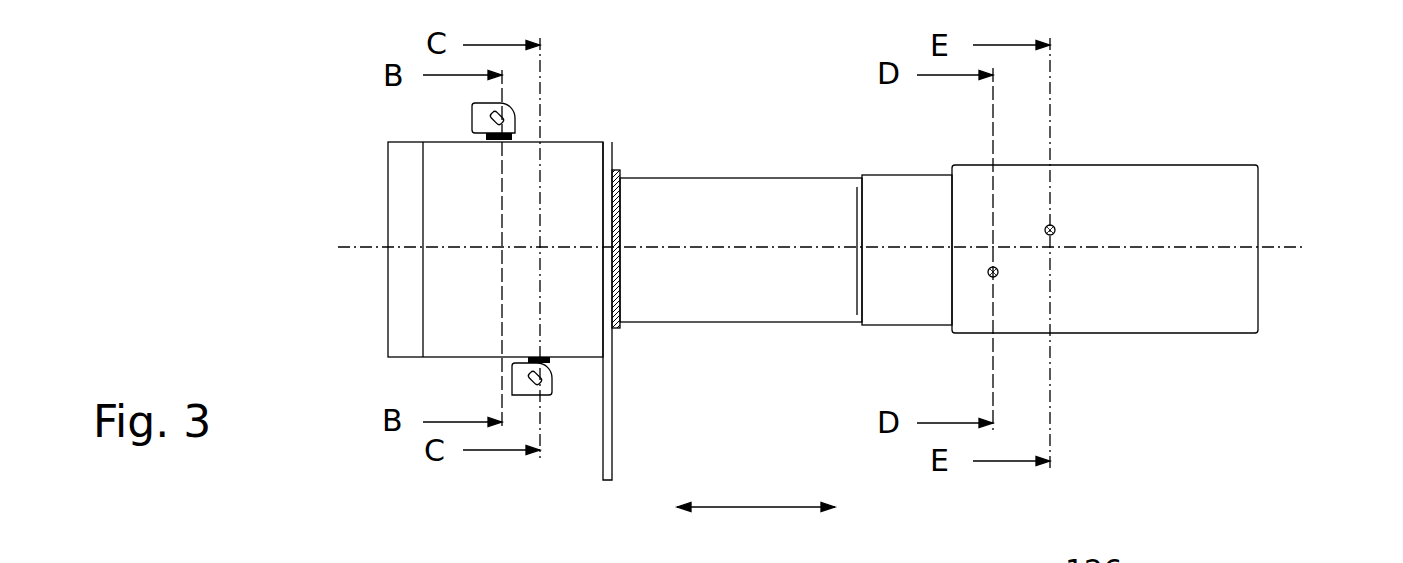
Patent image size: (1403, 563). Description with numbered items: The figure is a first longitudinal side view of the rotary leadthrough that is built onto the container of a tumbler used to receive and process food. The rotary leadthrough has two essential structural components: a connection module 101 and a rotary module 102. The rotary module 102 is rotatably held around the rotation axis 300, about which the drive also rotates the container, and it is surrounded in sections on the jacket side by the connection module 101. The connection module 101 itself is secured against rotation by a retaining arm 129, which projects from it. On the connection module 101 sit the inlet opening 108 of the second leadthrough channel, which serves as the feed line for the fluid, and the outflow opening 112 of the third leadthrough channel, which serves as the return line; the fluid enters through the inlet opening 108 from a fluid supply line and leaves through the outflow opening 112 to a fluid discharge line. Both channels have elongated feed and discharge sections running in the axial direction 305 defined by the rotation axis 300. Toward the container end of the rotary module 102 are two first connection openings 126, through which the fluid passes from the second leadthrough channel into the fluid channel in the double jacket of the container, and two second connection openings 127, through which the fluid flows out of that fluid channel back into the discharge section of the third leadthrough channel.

The connection module 101 is at (580, 137).
The rotary module 102 is at (1125, 162).
The inlet opening 108 is at (472, 118).
The outflow opening 112 is at (548, 387).
The first connection opening 126 is at (1067, 230).
The second connection opening 127 is at (978, 273).
The retaining arm 129 is at (614, 411).
The rotation axis 300 is at (773, 242).
The axial direction 305 is at (752, 505).